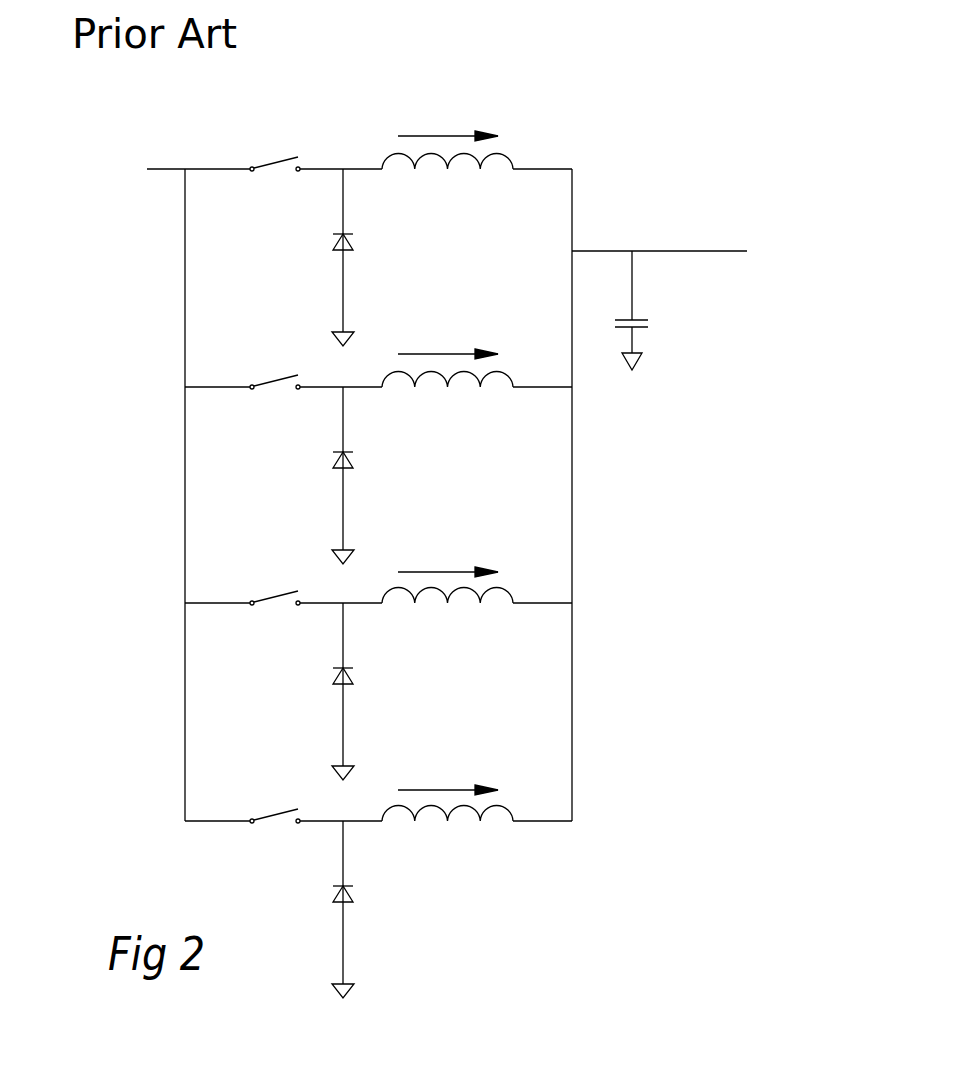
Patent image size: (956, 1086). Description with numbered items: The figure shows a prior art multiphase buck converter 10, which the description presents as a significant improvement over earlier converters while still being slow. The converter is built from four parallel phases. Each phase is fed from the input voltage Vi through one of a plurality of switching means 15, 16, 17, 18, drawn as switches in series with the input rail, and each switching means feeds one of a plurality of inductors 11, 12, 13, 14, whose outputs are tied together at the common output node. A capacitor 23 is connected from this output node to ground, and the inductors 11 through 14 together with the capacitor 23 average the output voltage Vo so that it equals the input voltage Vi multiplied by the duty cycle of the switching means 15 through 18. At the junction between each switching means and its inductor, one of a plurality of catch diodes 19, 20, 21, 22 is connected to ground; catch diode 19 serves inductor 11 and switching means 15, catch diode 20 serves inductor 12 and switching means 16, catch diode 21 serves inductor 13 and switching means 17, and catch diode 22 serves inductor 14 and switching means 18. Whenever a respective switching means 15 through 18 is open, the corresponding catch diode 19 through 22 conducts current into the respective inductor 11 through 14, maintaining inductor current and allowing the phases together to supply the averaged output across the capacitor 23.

The multiphase buck converter 10 is at (382, 71).
The inductor 11 is at (463, 140).
The inductor 12 is at (488, 401).
The inductor 13 is at (503, 614).
The inductor 14 is at (495, 833).
The switching means 15 is at (280, 147).
The switching means 16 is at (263, 363).
The switching means 17 is at (250, 588).
The switching means 18 is at (283, 807).
The catch diode 19 is at (275, 253).
The catch diode 20 is at (263, 472).
The catch diode 21 is at (263, 685).
The catch diode 22 is at (367, 898).
The capacitor 23 is at (637, 305).